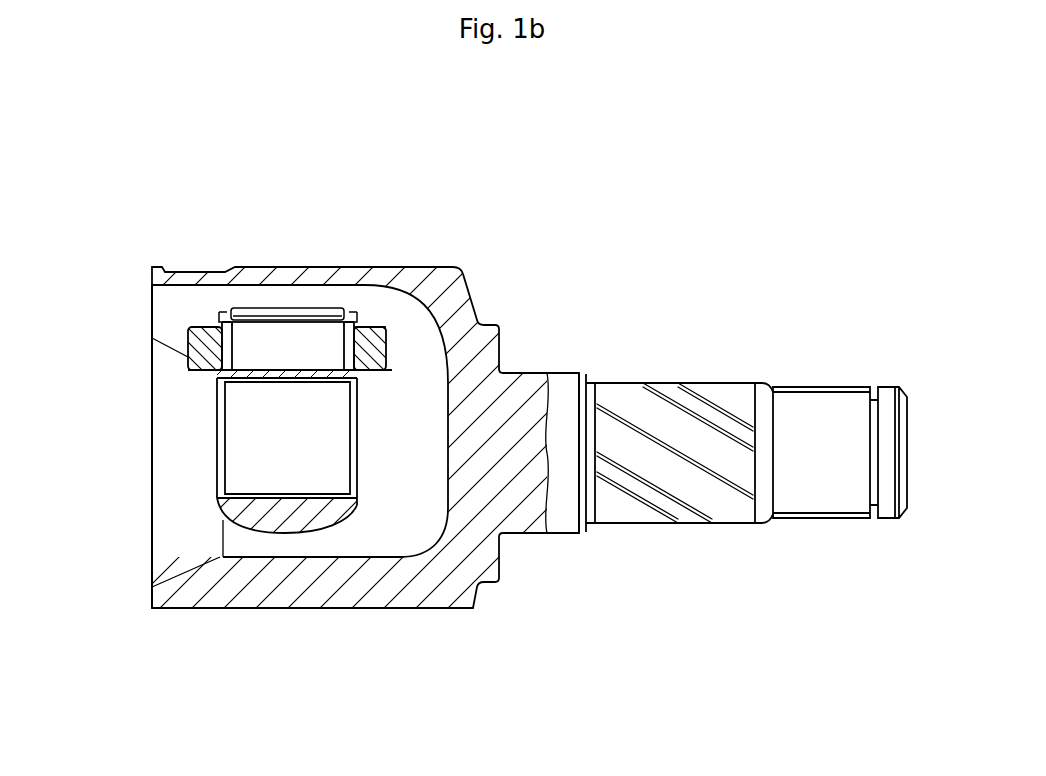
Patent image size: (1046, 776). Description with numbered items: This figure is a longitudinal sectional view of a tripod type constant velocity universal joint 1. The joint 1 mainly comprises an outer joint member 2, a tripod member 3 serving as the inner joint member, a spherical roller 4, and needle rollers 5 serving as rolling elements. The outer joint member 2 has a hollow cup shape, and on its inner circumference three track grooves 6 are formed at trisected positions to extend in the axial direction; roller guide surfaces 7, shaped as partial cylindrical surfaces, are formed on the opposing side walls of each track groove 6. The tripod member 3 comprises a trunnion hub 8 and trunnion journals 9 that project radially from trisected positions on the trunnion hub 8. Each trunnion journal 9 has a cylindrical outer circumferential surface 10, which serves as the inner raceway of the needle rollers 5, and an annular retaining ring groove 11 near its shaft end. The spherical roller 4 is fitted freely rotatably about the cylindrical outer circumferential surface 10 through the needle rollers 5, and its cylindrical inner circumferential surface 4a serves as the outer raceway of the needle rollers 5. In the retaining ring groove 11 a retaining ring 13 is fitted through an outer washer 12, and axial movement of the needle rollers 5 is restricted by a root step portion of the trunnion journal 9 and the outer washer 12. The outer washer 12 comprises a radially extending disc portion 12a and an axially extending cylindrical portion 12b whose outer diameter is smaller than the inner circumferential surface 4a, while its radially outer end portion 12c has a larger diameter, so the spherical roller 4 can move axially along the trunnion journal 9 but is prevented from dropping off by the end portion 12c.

The tripod type constant velocity universal joint 1 is at (308, 189).
The outer joint member 2 is at (381, 263).
The tripod member 3 is at (328, 521).
The spherical roller 4 is at (390, 338).
The inner circumferential surface 4a is at (215, 372).
The needle rollers 5 is at (212, 326).
The track groove 6 is at (172, 300).
The roller guide surface 7 is at (170, 322).
The trunnion hub 8 is at (274, 527).
The trunnion journal 9 is at (297, 337).
The cylindrical outer circumferential surface 10 is at (270, 337).
The retaining ring groove 11 is at (246, 320).
The outer washer 12 is at (338, 313).
The disc portion 12a is at (372, 370).
The cylindrical portion 12b is at (368, 325).
The end portion 12c is at (349, 320).
The retaining ring 13 is at (220, 311).